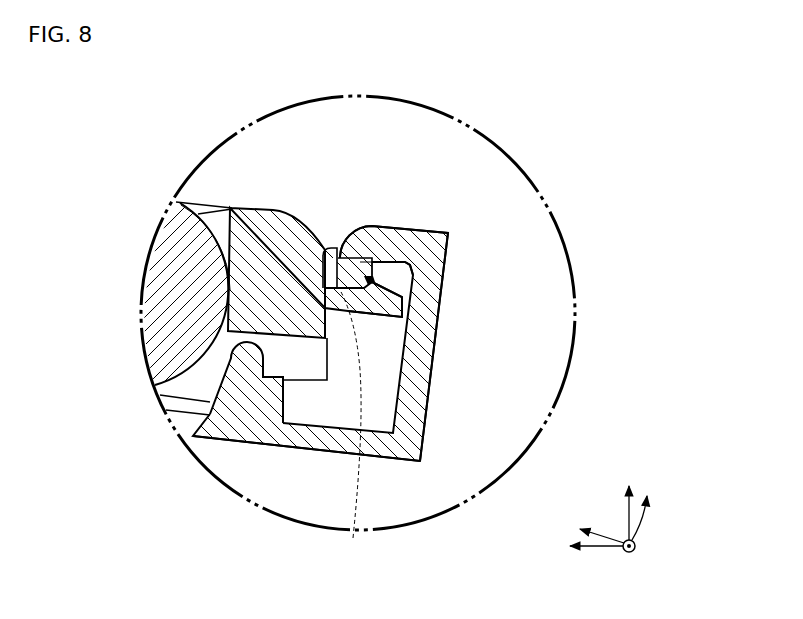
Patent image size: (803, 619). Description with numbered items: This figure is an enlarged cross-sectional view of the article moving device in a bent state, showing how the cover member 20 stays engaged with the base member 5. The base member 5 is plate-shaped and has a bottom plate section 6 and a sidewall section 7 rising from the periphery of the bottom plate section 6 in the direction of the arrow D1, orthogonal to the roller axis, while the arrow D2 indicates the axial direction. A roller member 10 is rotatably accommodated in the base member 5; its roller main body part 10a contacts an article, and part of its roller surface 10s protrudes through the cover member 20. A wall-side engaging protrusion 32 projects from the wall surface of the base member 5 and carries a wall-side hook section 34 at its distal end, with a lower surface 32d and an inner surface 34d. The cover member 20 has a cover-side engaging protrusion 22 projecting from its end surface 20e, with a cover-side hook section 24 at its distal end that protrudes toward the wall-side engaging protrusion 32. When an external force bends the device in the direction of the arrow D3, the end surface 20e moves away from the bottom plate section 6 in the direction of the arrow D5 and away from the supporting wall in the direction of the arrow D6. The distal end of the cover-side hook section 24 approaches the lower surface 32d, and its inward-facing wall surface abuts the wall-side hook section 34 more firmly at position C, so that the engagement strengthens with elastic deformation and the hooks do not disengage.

The base member 5 is at (436, 407).
The bottom plate section 6 is at (315, 452).
The sidewall section 7 is at (430, 374).
The roller member 10 is at (197, 372).
The roller main body part 10a is at (162, 338).
The roller surface 10s is at (205, 215).
The cover member 20 is at (292, 208).
The end surface 20e is at (352, 427).
The cover-side engaging protrusion 22 is at (380, 316).
The cover-side hook section 24 is at (403, 293).
The wall-side engaging protrusion 32 is at (423, 232).
The lower surface 32d is at (413, 272).
The wall-side hook section 34 is at (330, 252).
The inner surface 34d is at (371, 278).
The position C is at (366, 278).
The arrow D1 is at (585, 548).
The arrow D2 is at (641, 557).
The arrow D3 is at (627, 503).
The arrow D5 is at (645, 515).
The arrow D6 is at (600, 532).